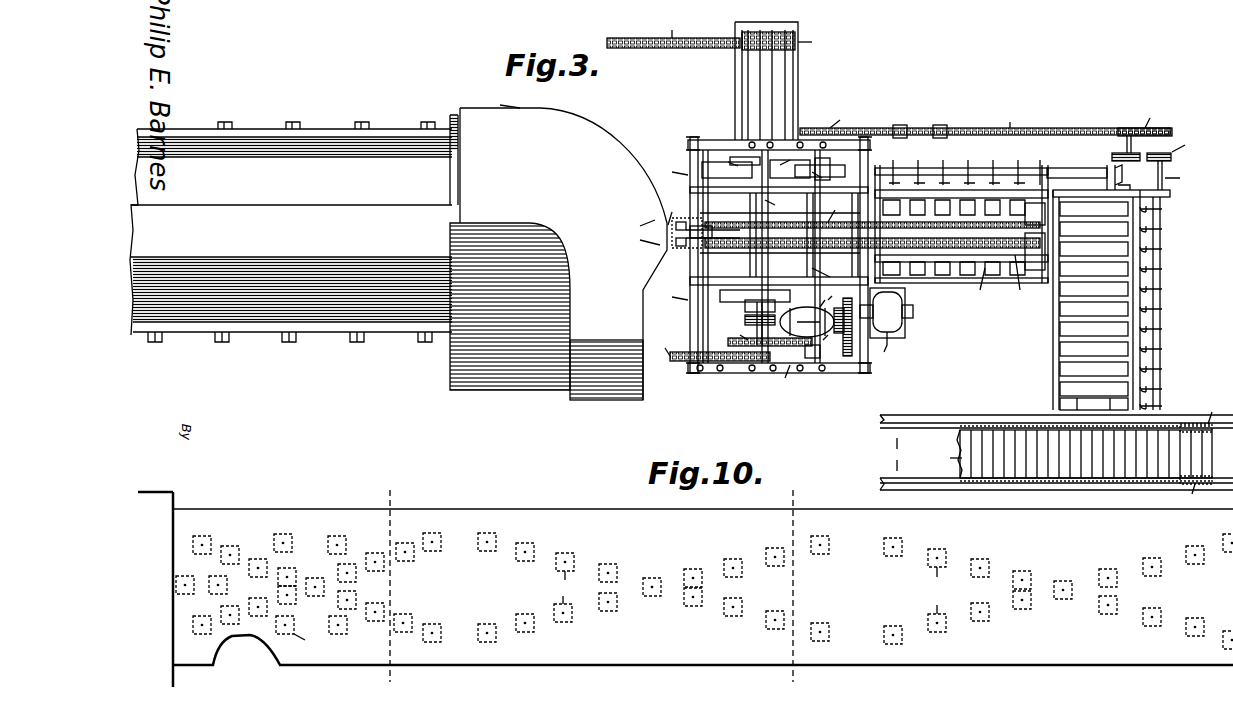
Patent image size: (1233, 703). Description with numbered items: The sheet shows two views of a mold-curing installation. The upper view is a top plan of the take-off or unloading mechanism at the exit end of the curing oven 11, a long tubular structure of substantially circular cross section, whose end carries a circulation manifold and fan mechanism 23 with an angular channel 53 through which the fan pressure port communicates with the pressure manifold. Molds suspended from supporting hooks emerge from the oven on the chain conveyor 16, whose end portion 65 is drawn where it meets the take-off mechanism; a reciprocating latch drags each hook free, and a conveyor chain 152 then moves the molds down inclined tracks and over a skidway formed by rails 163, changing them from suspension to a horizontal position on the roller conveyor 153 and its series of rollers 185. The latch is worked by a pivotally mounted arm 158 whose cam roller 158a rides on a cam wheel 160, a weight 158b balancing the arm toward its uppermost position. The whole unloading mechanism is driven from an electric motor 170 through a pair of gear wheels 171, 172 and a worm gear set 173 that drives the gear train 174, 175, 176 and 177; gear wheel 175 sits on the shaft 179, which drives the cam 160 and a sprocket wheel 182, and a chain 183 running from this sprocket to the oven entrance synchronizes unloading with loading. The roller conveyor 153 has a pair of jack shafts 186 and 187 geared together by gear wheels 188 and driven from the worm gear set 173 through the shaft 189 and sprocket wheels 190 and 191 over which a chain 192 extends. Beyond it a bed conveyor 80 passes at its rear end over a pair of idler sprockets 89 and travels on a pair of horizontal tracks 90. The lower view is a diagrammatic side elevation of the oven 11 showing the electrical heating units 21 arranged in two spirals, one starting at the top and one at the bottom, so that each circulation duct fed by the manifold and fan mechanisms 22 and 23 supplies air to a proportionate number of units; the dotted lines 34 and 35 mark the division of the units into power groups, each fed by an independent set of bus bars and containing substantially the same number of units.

In FIG. 3, the curing oven 11 is at (291, 232).
In FIG. 10, the curing oven 11 is at (703, 578).
In FIG. 3, the chain conveyor 16 is at (699, 223).
In FIG. 10, the electrical heating units 21 is at (704, 595).
In FIG. 10, the circulation manifold and fan mechanism 22 is at (155, 589).
In FIG. 3, the circulation manifold and fan mechanism 23 is at (504, 99).
In FIG. 10, the dotted line 34 is at (387, 592).
In FIG. 10, the dotted line 35 is at (789, 592).
In FIG. 3, the angular channel 53 is at (558, 254).
In FIG. 3, the shaft end 65 is at (636, 232).
In FIG. 3, the bed conveyor 80 is at (1069, 453).
In FIG. 3, the idler sprockets 89 is at (1200, 454).
In FIG. 3, the horizontal tracks 90 is at (1056, 452).
In FIG. 3, the conveyor chain 152 is at (872, 221).
In FIG. 3, the roller conveyor 153 is at (1092, 300).
In FIG. 3, the pivotally mounted arm 158 is at (762, 255).
In FIG. 3, the cam roller 158a is at (731, 164).
In FIG. 3, the weight 158b is at (784, 226).
In FIG. 3, the cam wheel 160 is at (777, 247).
In FIG. 3, the rails 163 is at (1027, 253).
In FIG. 3, the electric motor 170 is at (886, 324).
In FIG. 3, the gear wheel 171 is at (830, 309).
In FIG. 3, the gear wheel 172 is at (841, 330).
In FIG. 3, the worm gear set 173 is at (809, 315).
In FIG. 3, the gear wheel 174 is at (825, 343).
In FIG. 3, the gear wheel 175 is at (769, 334).
In FIG. 3, the gear wheel 176 is at (784, 379).
In FIG. 3, the gear wheel 177 is at (710, 347).
In FIG. 3, the shaft 179 is at (782, 202).
In FIG. 3, the sprocket wheel 182 is at (789, 81).
In FIG. 3, the chain 183 is at (673, 33).
In FIG. 3, the rollers 185 is at (961, 231).
In FIG. 3, the jack shaft 186 is at (1088, 170).
In FIG. 3, the jack shaft 187 is at (1183, 175).
In FIG. 3, the gear wheels 188 is at (1160, 149).
In FIG. 3, the shaft 189 is at (830, 177).
In FIG. 3, the sprocket wheel 190 is at (985, 122).
In FIG. 3, the sprocket wheel 191 is at (1145, 127).
In FIG. 3, the chain 192 is at (1010, 118).